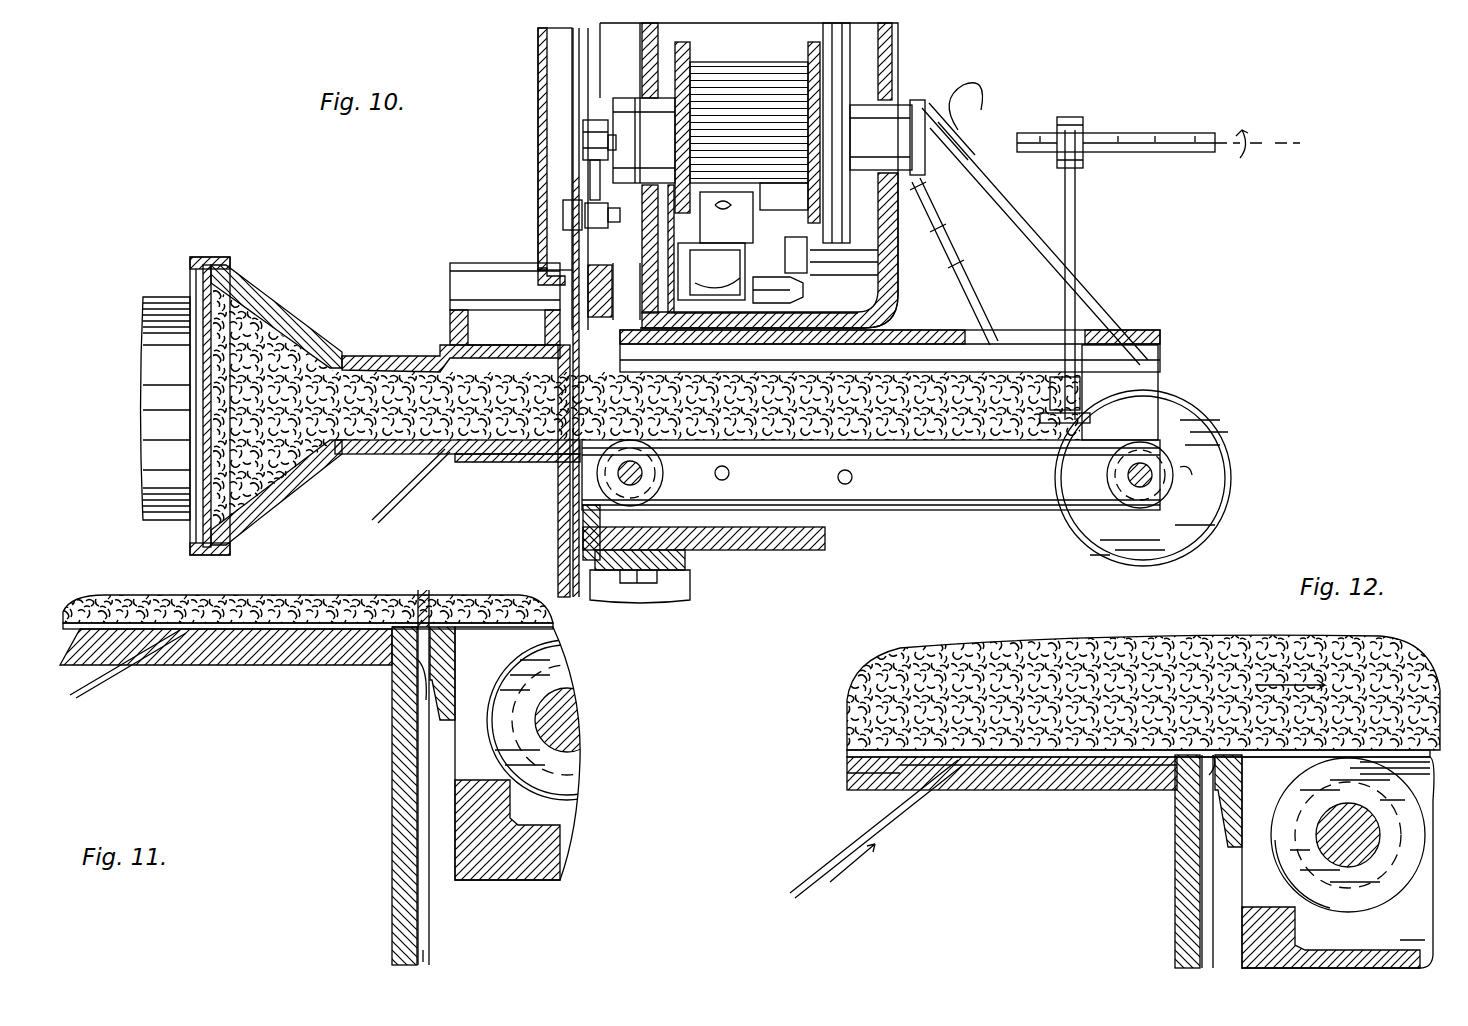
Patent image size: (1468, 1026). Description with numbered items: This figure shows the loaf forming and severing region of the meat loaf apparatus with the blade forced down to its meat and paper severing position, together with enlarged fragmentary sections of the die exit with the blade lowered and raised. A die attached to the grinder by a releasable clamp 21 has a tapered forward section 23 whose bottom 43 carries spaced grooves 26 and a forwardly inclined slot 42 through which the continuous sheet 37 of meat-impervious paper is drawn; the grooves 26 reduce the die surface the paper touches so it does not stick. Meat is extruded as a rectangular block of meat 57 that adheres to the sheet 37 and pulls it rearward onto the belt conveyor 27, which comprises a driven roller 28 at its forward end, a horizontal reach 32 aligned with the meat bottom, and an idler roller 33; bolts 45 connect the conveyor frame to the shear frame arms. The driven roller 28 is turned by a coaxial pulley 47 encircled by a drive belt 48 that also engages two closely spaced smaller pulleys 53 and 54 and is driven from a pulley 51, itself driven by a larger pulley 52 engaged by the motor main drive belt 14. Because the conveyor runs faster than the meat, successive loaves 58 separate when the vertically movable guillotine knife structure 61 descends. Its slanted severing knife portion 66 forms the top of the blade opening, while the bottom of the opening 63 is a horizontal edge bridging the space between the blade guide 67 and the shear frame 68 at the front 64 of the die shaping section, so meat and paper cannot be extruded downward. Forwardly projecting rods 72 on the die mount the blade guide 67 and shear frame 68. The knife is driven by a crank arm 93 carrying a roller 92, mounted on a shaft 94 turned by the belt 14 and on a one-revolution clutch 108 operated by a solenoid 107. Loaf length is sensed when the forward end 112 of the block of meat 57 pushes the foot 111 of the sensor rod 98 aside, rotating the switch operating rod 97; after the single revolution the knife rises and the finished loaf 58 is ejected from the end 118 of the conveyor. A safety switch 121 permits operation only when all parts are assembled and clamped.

In FIG. 10, the main drive belt 14 is at (840, 52).
In FIG. 10, the releasable clamp 21 is at (212, 267).
In FIG. 10, the tapered forward section 23 is at (263, 312).
In FIG. 11, the grooves 26 is at (290, 667).
In FIG. 12, the grooves 26 is at (1055, 800).
In FIG. 10, the belt conveyor 27 is at (939, 514).
In FIG. 10, the driven roller 28 is at (1107, 472).
In FIG. 10, the horizontal reach 32 is at (953, 450).
In FIG. 11, the horizontal reach 32 is at (568, 801).
In FIG. 12, the horizontal reach 32 is at (1396, 928).
In FIG. 10, the idler roller 33 is at (642, 475).
In FIG. 11, the idler roller 33 is at (572, 717).
In FIG. 12, the idler roller 33 is at (1378, 850).
In FIG. 10, the sheet 37 is at (372, 503).
In FIG. 11, the sheet 37 is at (90, 701).
In FIG. 12, the sheet 37 is at (807, 876).
In FIG. 10, the slot 42 is at (425, 456).
In FIG. 11, the slot 42 is at (147, 632).
In FIG. 12, the slot 42 is at (890, 800).
In FIG. 12, the bottom 43 is at (847, 786).
In FIG. 10, the bolts 45 is at (729, 473).
In FIG. 10, the coaxial pulley 47 is at (1204, 423).
In FIG. 10, the drive belt 48 is at (1098, 310).
In FIG. 10, the pulley 51 is at (882, 155).
In FIG. 10, the larger pulley 52 is at (867, 83).
In FIG. 10, the smaller pulley 53 is at (983, 128).
In FIG. 10, the smaller pulley 54 is at (952, 220).
In FIG. 10, the block of meat 57 is at (380, 374).
In FIG. 11, the block of meat 57 is at (290, 614).
In FIG. 12, the block of meat 57 is at (1166, 688).
In FIG. 10, the loaf 58 is at (897, 382).
In FIG. 10, the guillotine knife structure 61 is at (552, 295).
In FIG. 11, the guillotine knife structure 61 is at (429, 602).
In FIG. 12, the guillotine knife structure 61 is at (1210, 792).
In FIG. 11, the bottom of the opening 63 is at (413, 936).
In FIG. 12, the bottom of the opening 63 is at (1210, 750).
In FIG. 11, the front of the rear of the shaping section 64 is at (394, 674).
In FIG. 12, the front of the rear of the shaping section 64 is at (1180, 769).
In FIG. 10, the slanted severing knife portion 66 is at (575, 504).
In FIG. 11, the slanted severing knife portion 66 is at (414, 707).
In FIG. 10, the blade guide 67 is at (538, 120).
In FIG. 11, the blade guide 67 is at (392, 805).
In FIG. 12, the blade guide 67 is at (1175, 907).
In FIG. 11, the shear frame 68 is at (454, 656).
In FIG. 12, the shear frame 68 is at (1247, 801).
In FIG. 10, the rods 72 is at (767, 278).
In FIG. 10, the roller 92 is at (563, 216).
In FIG. 10, the crank arm 93 is at (573, 174).
In FIG. 10, the shaft 94 is at (616, 117).
In FIG. 10, the switch operating rod 97 is at (1107, 145).
In FIG. 10, the sensor rod 98 is at (1075, 210).
In FIG. 10, the solenoid 107 is at (715, 246).
In FIG. 10, the one-revolution clutch 108 is at (765, 124).
In FIG. 10, the foot 111 is at (1090, 413).
In FIG. 10, the forward end 112 is at (1080, 392).
In FIG. 10, the end of the conveyor 118 is at (1194, 485).
In FIG. 10, the safety switch 121 is at (807, 256).